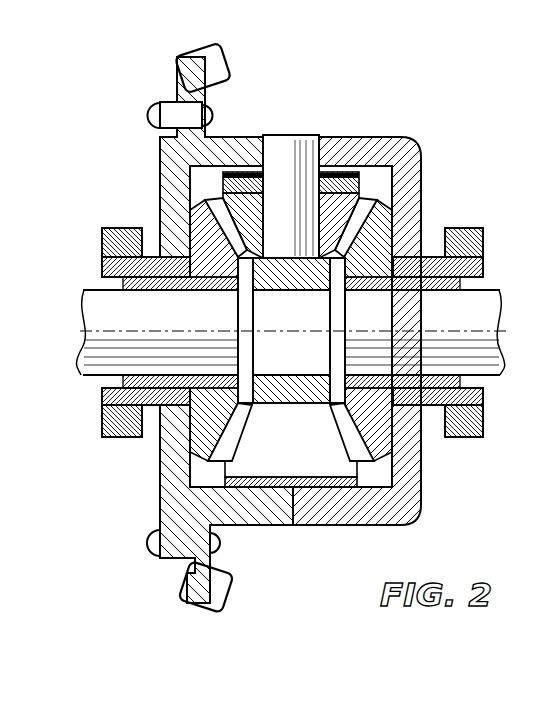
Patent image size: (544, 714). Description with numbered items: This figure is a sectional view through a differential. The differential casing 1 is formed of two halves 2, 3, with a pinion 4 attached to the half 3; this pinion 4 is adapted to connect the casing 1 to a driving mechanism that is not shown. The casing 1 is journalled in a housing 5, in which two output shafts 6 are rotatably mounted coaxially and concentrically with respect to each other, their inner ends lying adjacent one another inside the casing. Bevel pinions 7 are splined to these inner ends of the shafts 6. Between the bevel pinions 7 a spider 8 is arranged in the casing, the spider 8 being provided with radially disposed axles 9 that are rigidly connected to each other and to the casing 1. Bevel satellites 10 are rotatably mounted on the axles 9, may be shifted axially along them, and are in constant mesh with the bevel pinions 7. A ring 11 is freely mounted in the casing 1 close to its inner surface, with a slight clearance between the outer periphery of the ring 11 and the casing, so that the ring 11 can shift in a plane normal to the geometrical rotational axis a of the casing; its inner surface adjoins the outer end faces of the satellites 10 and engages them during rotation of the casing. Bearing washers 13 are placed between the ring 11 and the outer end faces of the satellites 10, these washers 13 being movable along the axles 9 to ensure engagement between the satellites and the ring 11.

The differential casing 1 is at (428, 479).
The casing half 2 is at (324, 513).
The casing half 3 is at (234, 513).
The pinion 4 is at (190, 578).
The housing 5 is at (102, 420).
The output shaft 6 is at (100, 323).
The bevel pinion 7 is at (205, 424).
The spider 8 is at (301, 408).
The radially disposed axle 9 is at (294, 150).
The bevel satellite 10 is at (328, 207).
The ring 11 is at (338, 172).
The bearing washer 13 is at (234, 172).
The geometrical rotational axis a is at (499, 318).